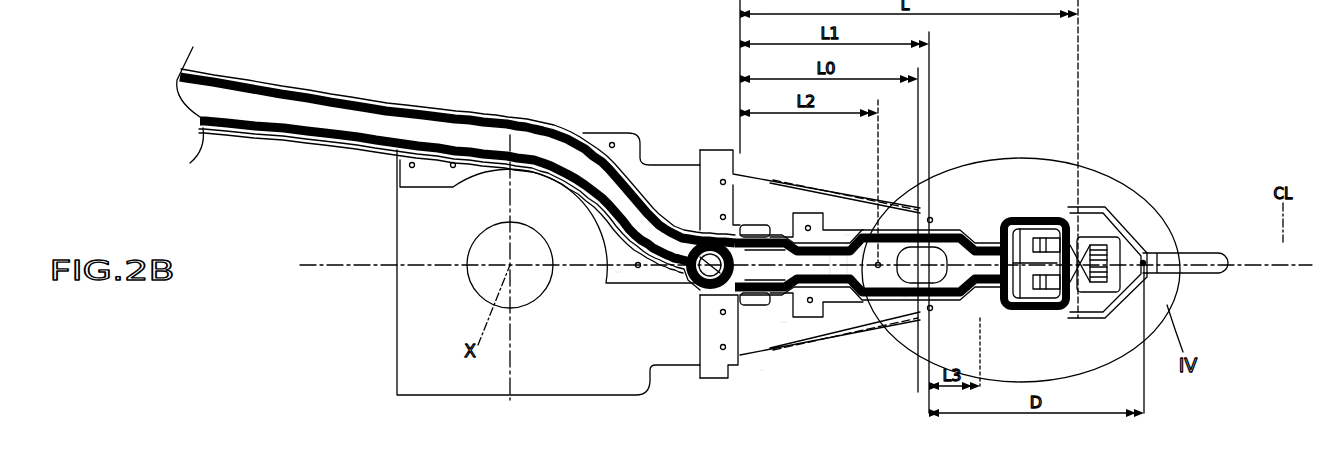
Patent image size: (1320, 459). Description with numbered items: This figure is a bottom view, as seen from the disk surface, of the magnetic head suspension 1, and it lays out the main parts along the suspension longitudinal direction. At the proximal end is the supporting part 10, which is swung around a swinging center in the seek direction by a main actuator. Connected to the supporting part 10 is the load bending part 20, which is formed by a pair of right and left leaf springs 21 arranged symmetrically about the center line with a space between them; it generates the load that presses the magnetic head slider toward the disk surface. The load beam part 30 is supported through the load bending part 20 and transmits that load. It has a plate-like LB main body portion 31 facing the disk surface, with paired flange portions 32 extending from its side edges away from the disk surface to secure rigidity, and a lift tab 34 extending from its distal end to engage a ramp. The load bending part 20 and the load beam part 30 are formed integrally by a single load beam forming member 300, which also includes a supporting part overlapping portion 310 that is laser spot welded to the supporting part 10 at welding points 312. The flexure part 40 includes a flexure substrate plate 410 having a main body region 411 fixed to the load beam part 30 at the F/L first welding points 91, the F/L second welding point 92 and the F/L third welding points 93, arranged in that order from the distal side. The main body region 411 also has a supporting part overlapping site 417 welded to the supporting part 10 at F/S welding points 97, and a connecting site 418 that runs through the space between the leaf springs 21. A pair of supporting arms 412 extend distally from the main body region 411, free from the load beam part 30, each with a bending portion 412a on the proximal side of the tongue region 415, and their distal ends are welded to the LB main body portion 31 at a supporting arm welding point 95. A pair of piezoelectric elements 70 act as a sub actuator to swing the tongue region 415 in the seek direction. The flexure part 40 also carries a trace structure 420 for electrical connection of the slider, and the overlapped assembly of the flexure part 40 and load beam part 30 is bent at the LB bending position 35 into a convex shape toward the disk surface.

The magnetic head suspension 1 is at (658, 103).
The supporting part 10 is at (428, 376).
The load bending part 20 is at (762, 376).
The leaf springs 21 is at (752, 188).
The load beam part 30 is at (863, 350).
The LB main body portion 31 is at (783, 323).
The flange portions 32 is at (820, 183).
The lift tab 34 is at (1217, 253).
The LB bending position 35 is at (905, 298).
The flexure part 40 is at (830, 310).
The piezoelectric elements 70 is at (1060, 218).
The F/L first welding points 91 is at (931, 218).
The F/L second welding point 92 is at (878, 262).
The F/L third welding points 93 is at (808, 225).
The supporting arm welding point 95 is at (1145, 260).
The F/S welding points 97 is at (412, 168).
The load beam forming member 300 is at (890, 327).
The supporting part overlapping portion 310 is at (710, 362).
The welding points 312 is at (724, 176).
The flexure substrate plate 410 is at (847, 296).
The main body region 411 is at (847, 236).
The supporting arms 412 is at (1026, 215).
The bending portion 412a is at (1003, 215).
The tongue region 415 is at (1092, 240).
The supporting part overlapping site 417 is at (618, 272).
The connecting site 418 is at (753, 288).
The trace structure 420 is at (671, 214).